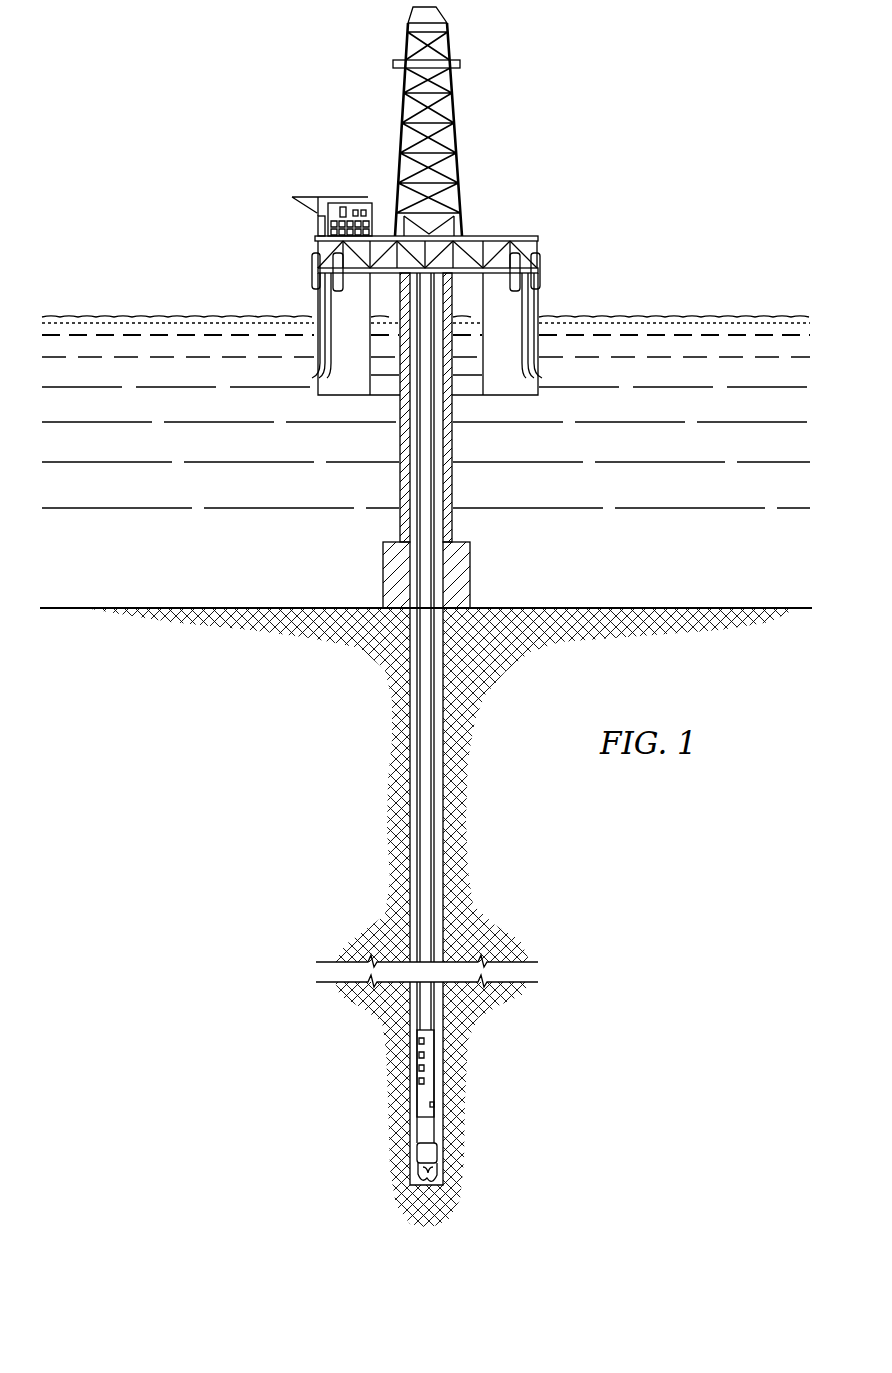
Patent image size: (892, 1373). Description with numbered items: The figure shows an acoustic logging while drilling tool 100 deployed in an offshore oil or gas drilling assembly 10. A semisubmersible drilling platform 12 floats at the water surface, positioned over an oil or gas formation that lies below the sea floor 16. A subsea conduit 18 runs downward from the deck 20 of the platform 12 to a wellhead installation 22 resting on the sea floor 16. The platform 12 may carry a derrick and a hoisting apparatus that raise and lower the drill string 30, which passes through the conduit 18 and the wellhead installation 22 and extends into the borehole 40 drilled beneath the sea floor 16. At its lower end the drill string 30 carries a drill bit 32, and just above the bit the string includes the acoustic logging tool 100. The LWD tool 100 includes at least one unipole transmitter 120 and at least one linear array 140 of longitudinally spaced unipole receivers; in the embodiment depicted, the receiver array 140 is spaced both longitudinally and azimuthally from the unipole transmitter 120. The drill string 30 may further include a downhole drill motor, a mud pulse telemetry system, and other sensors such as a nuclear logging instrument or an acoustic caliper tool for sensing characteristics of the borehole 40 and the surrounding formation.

The offshore oil or gas drilling assembly 10 is at (527, 126).
The semisubmersible drilling platform 12 is at (527, 237).
The deck 20 is at (541, 271).
The sea floor 16 is at (685, 608).
The subsea conduit 18 is at (453, 488).
The wellhead installation 22 is at (463, 541).
The drill string 30 is at (430, 409).
The borehole 40 is at (408, 875).
The acoustic logging while drilling tool 100 is at (427, 1080).
The unipole transmitter 120 is at (434, 1105).
The linear array of unipole receivers 140 is at (382, 1038).
The drill bit 32 is at (440, 1182).